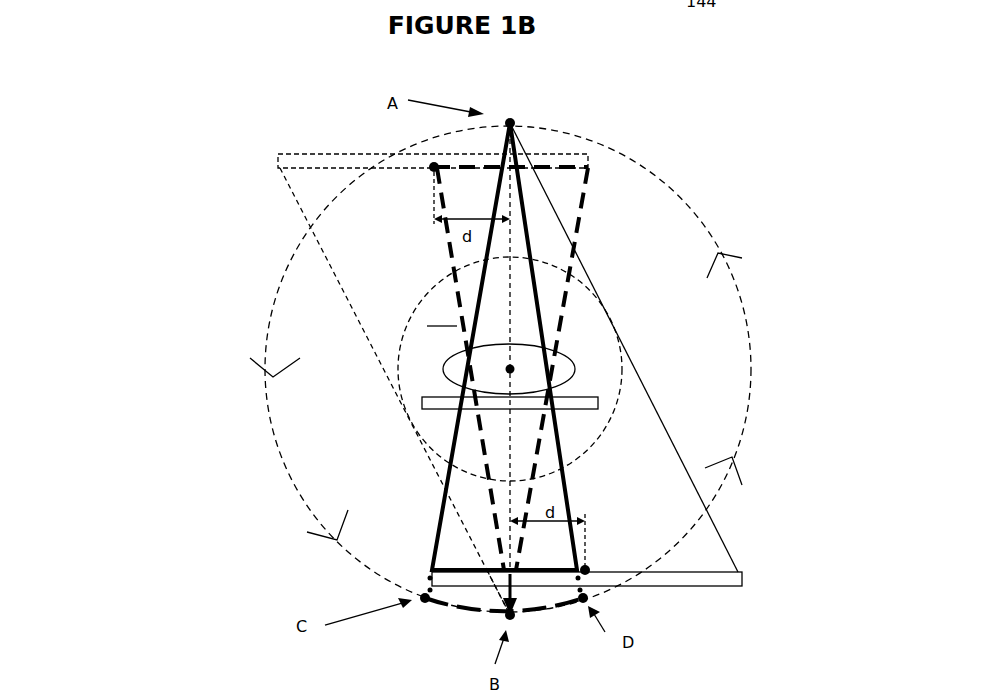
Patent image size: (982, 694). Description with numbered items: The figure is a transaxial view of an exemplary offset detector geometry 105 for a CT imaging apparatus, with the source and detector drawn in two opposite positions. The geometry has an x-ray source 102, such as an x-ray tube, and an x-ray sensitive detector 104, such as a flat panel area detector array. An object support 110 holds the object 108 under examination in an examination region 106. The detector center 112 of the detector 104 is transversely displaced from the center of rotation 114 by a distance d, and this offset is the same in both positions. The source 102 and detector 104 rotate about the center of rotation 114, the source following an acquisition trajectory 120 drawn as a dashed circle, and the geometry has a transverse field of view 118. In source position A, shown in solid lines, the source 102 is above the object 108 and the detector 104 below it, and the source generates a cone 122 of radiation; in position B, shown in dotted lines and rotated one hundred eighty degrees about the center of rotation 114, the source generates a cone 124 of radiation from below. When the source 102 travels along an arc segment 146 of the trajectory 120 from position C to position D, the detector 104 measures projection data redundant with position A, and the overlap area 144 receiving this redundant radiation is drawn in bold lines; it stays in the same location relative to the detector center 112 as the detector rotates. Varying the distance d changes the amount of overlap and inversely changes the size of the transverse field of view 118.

The x-ray source 102 is at (512, 122).
The x-ray sensitive detector 104 is at (573, 160).
The offset detector geometry 105 is at (147, 232).
The examination region 106 is at (471, 341).
The object 108 is at (443, 367).
The object support 110 is at (423, 405).
The detector center 112 is at (434, 167).
The center of rotation 114 is at (512, 368).
The transverse field of view 118 is at (598, 446).
The acquisition trajectory 120 is at (272, 342).
The cone of radiation in source position A 122 is at (583, 273).
The cone of radiation in source position B 124 is at (298, 202).
The overlap area 144 is at (528, 165).
The arc segment 146 is at (448, 612).